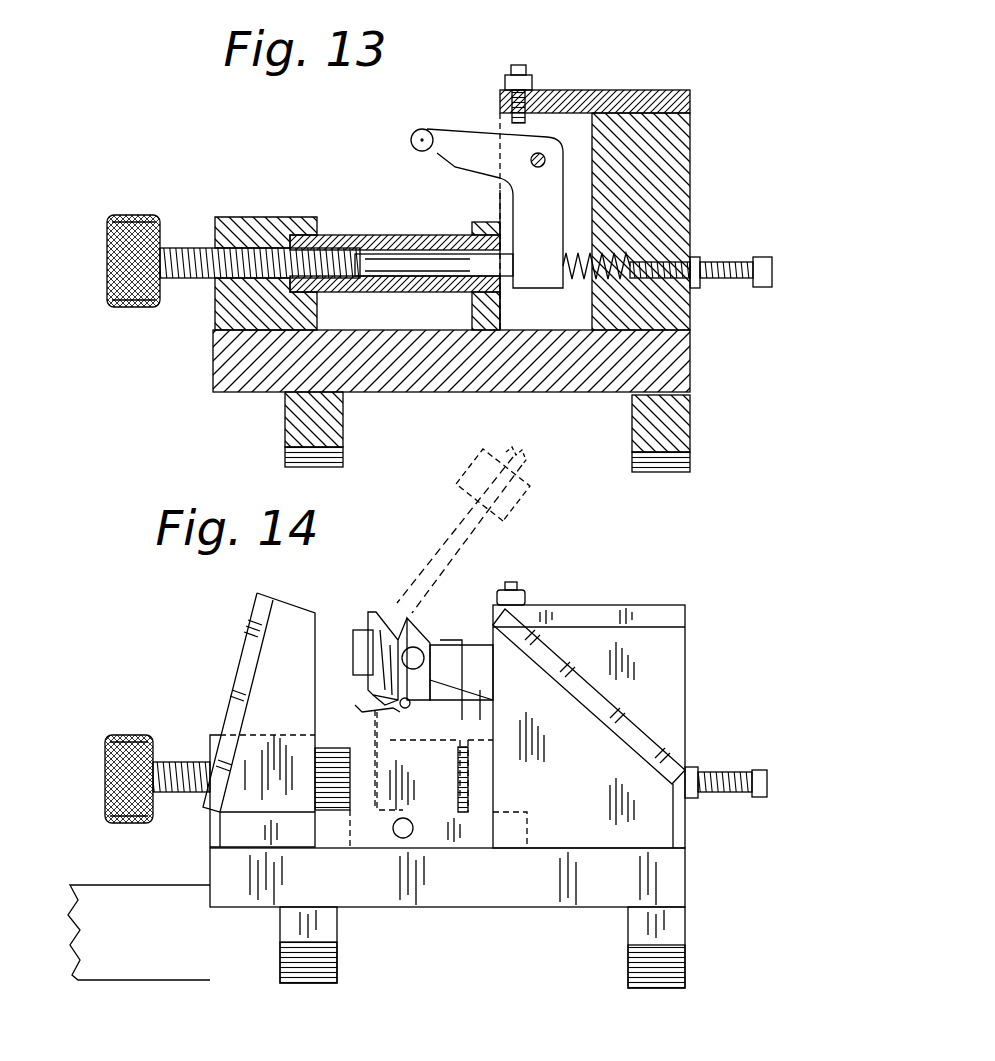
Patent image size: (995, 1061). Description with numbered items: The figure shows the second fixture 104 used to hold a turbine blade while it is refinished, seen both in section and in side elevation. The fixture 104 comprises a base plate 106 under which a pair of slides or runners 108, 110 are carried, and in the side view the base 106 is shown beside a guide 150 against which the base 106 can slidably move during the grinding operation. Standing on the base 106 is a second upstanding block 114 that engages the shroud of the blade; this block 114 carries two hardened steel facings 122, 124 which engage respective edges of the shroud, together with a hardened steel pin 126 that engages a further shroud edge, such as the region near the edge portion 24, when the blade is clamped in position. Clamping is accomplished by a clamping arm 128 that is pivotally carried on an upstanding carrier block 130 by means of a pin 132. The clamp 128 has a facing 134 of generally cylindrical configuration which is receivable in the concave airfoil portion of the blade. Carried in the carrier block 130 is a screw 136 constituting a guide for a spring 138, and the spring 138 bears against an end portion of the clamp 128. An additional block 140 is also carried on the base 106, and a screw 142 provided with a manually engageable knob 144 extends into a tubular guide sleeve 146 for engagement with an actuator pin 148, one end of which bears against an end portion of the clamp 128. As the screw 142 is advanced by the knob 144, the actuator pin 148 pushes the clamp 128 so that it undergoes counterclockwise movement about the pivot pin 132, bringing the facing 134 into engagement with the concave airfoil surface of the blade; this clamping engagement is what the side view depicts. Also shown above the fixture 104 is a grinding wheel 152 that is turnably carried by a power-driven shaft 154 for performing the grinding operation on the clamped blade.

In FIG. 14, the edge portion 24 is at (391, 637).
In FIG. 13, the second fixture 104 is at (729, 382).
In FIG. 14, the second fixture 104 is at (498, 978).
In FIG. 13, the base plate 106 is at (443, 382).
In FIG. 14, the base plate 106 is at (482, 898).
In FIG. 13, the slide or runner 108 is at (343, 437).
In FIG. 14, the slide or runner 108 is at (330, 933).
In FIG. 13, the slide or runner 110 is at (633, 430).
In FIG. 14, the slide or runner 110 is at (630, 935).
In FIG. 14, the second upstanding block 114 is at (418, 808).
In FIG. 14, the hardened steel facing 122 is at (362, 712).
In FIG. 14, the hardened steel facing 124 is at (434, 684).
In FIG. 14, the hardened steel pin 126 is at (412, 730).
In FIG. 13, the clamping arm 128 is at (459, 109).
In FIG. 14, the clamping arm 128 is at (477, 645).
In FIG. 13, the carrier block 130 is at (665, 162).
In FIG. 13, the pin 132 is at (541, 153).
In FIG. 13, the facing 134 is at (411, 140).
In FIG. 13, the screw 136 is at (722, 262).
In FIG. 14, the screw 136 is at (727, 775).
In FIG. 13, the spring 138 is at (576, 281).
In FIG. 13, the additional block 140 is at (261, 220).
In FIG. 14, the additional block 140 is at (214, 740).
In FIG. 13, the screw 142 is at (192, 285).
In FIG. 14, the screw 142 is at (178, 763).
In FIG. 13, the knob 144 is at (132, 222).
In FIG. 14, the knob 144 is at (123, 738).
In FIG. 13, the tubular guide sleeve 146 is at (366, 236).
In FIG. 14, the tubular guide sleeve 146 is at (333, 752).
In FIG. 13, the actuator pin 148 is at (417, 279).
In FIG. 14, the guide 150 is at (125, 898).
In FIG. 14, the grinding wheel 152 is at (447, 545).
In FIG. 14, the power-driven shaft 154 is at (472, 492).